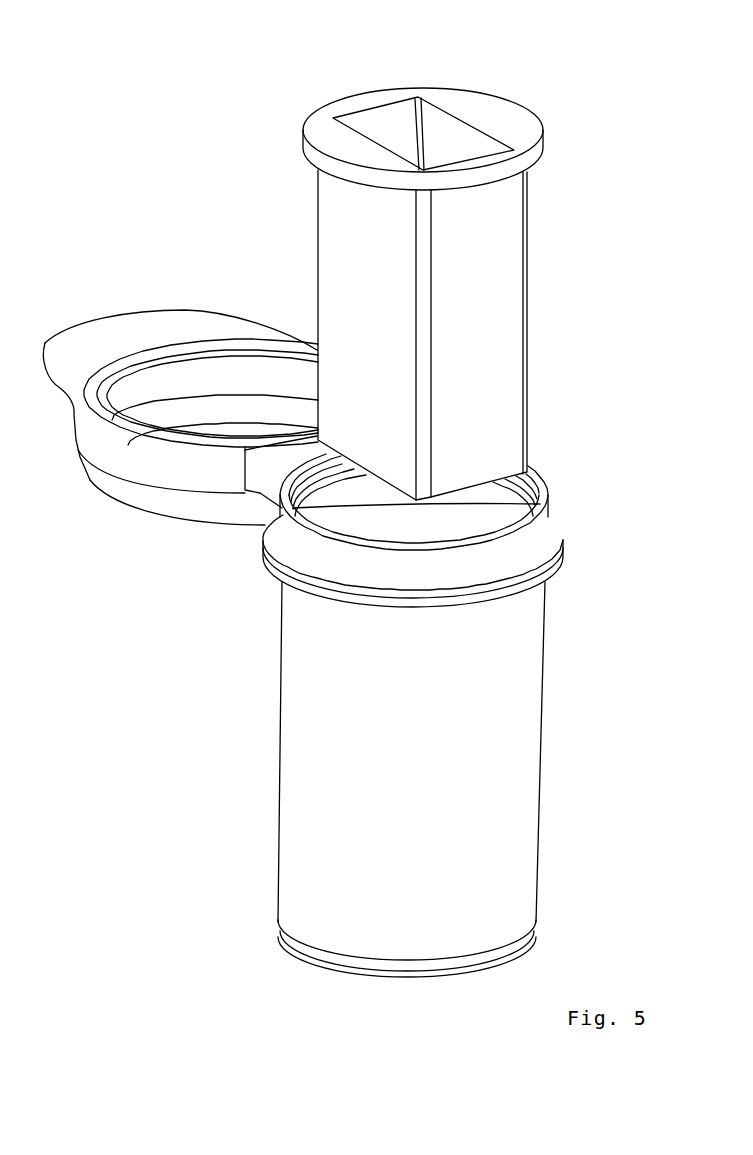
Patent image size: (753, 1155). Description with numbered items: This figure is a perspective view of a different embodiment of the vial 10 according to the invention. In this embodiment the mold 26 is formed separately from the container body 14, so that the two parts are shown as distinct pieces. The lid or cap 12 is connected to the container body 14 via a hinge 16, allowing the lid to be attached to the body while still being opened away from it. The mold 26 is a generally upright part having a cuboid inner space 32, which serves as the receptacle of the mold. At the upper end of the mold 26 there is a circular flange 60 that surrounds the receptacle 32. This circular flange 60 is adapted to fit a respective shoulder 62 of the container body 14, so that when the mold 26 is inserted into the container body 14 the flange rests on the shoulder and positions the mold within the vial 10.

The vial 10 is at (190, 870).
The lid or cap 12 is at (108, 482).
The container body 14 is at (522, 760).
The hinge 16 is at (248, 542).
The mold 26 is at (500, 302).
The cuboid inner space 32 is at (423, 88).
The circular flange 60 is at (508, 123).
The shoulder 62 is at (543, 490).